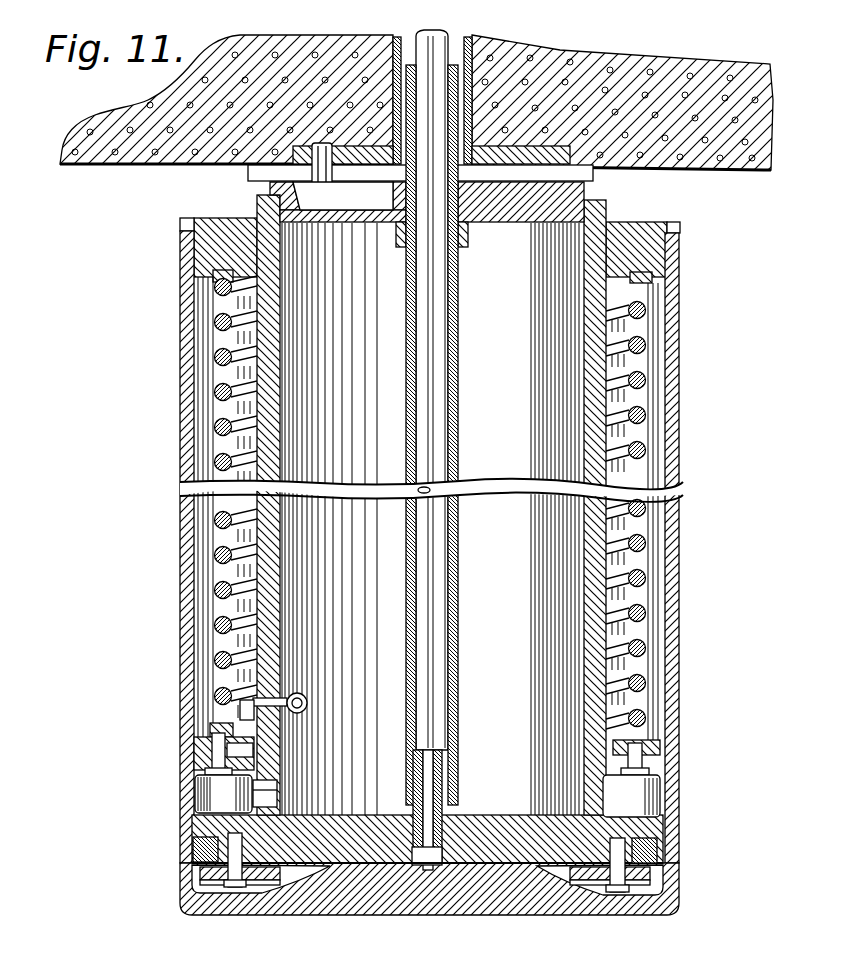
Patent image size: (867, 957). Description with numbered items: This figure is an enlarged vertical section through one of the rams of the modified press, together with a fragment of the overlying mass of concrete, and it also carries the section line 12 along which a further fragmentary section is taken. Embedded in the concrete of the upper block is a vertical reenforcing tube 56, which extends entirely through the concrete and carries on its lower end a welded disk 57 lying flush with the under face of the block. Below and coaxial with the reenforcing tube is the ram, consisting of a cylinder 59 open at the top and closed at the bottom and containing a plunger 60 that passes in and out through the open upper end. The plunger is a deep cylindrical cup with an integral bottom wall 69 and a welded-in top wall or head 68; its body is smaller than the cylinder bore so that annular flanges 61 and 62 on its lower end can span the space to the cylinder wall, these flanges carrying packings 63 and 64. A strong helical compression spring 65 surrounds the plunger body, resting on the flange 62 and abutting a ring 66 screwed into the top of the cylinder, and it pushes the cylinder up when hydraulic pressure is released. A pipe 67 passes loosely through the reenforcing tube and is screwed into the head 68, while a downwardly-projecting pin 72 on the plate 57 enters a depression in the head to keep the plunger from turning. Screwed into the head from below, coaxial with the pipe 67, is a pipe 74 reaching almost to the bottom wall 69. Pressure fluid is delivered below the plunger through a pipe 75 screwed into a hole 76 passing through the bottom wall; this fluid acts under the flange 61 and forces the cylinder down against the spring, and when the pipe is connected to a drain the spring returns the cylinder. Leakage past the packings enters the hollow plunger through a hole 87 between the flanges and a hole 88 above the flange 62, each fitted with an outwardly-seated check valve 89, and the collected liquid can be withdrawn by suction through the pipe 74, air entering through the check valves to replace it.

The section line 12 is at (228, 165).
The reenforcing tube 56 is at (400, 36).
The disk 57 is at (558, 170).
The cylinder 59 is at (680, 386).
The plunger 60 is at (263, 339).
The annular flange 61 is at (193, 817).
The annular flange 62 is at (205, 755).
The packing 63 is at (662, 849).
The packing 64 is at (680, 760).
The helical compression spring 65 is at (662, 608).
The ring 66 is at (208, 247).
The pipe 67 is at (462, 72).
The head 68 is at (490, 228).
The bottom wall 69 is at (487, 828).
The pin 72 is at (300, 177).
The pipe 74 is at (455, 588).
The pipe 75 is at (355, 200).
The hole 76 is at (424, 915).
The hole 87 is at (253, 797).
The hole 88 is at (247, 711).
The check valve 89 is at (280, 684).